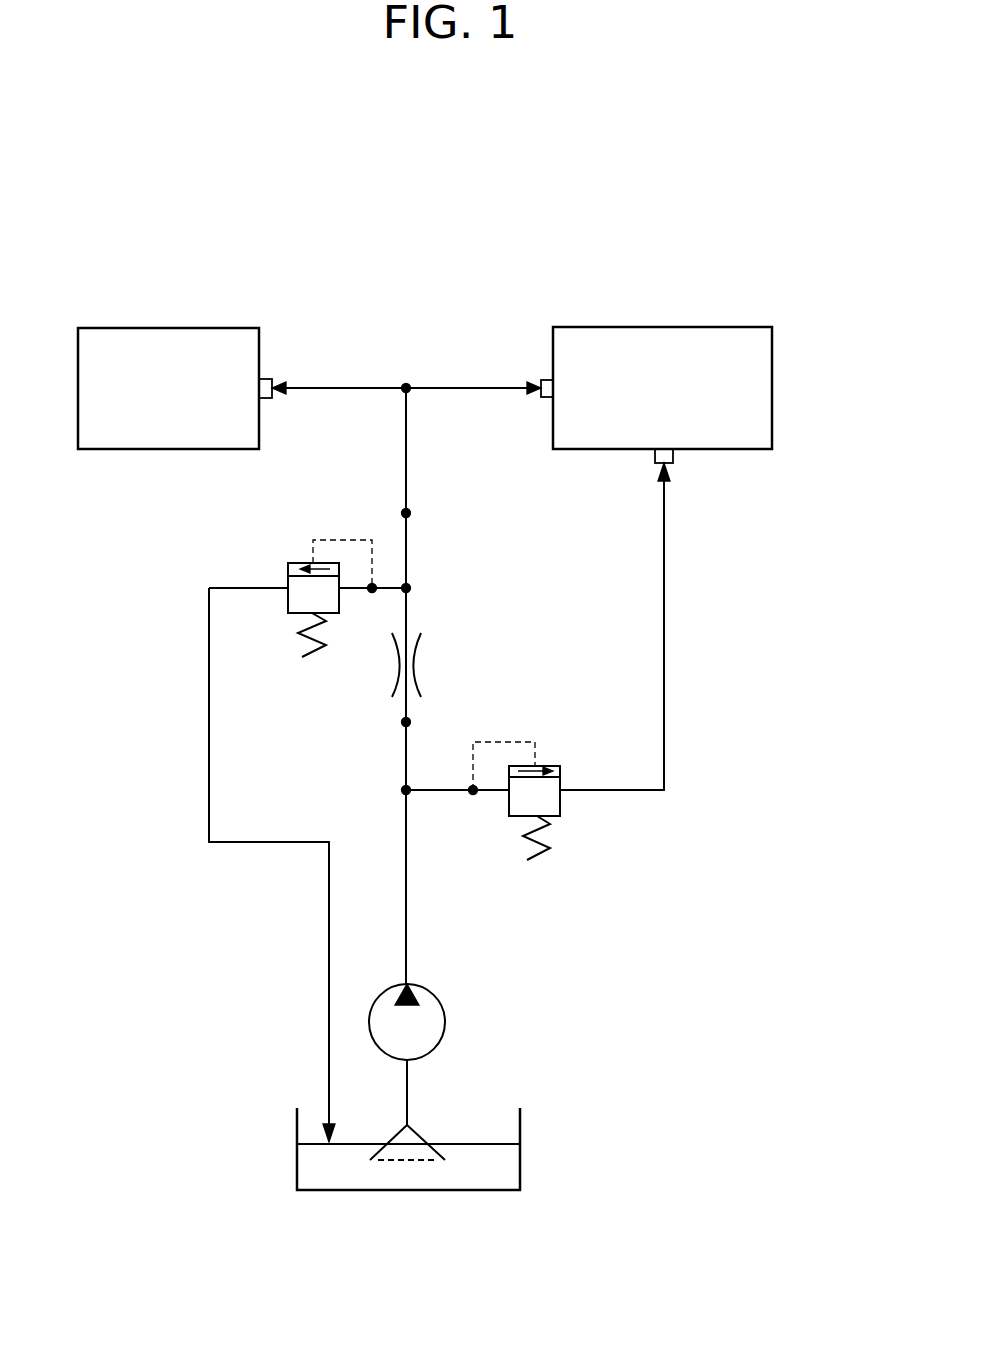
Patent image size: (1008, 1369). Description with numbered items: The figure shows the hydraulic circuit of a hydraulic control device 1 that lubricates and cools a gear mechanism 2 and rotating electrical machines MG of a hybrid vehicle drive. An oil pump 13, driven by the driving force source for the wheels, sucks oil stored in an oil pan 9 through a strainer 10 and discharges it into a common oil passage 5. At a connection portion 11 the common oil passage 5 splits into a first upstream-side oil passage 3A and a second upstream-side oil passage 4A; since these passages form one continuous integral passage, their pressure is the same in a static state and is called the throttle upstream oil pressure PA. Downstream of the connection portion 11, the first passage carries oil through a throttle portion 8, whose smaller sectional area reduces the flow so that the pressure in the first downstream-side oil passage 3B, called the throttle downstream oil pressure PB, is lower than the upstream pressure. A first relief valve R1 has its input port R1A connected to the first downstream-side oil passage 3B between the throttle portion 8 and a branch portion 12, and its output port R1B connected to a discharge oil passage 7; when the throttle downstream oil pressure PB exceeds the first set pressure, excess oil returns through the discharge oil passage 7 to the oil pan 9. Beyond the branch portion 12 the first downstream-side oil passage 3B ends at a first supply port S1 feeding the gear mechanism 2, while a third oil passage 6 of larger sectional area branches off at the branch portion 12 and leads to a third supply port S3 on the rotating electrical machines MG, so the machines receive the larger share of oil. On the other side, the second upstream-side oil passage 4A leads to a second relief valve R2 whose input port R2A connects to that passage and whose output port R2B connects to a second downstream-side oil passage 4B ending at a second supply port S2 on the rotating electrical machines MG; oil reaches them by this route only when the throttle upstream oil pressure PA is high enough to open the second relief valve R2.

The hydraulic control device 1 is at (692, 230).
The gear mechanism 2 is at (152, 327).
The rotating electrical machines MG is at (650, 327).
The first supply port S1 is at (267, 378).
The second supply port S2 is at (676, 456).
The third supply port S3 is at (546, 378).
The branch portion 12 is at (409, 392).
The third oil passage 6 is at (478, 385).
The first downstream-side oil passage 3B is at (406, 467).
The first upstream-side oil passage 3A is at (404, 757).
The throttle downstream oil pressure PB is at (411, 513).
The throttle upstream oil pressure PA is at (411, 722).
The throttle portion 8 is at (420, 663).
The first relief valve R1 is at (300, 561).
The input port R1A is at (340, 592).
The output port R1B is at (287, 592).
The discharge oil passage 7 is at (209, 792).
The connection portion 11 is at (404, 793).
The second upstream-side oil passage 4A is at (453, 795).
The second downstream-side oil passage 4B is at (664, 632).
The second relief valve R2 is at (552, 765).
The input port R2A is at (509, 762).
The output port R2B is at (562, 793).
The common oil passage 5 is at (408, 942).
The oil pump 13 is at (445, 1018).
The strainer 10 is at (415, 1120).
The oil pan 9 is at (520, 1160).